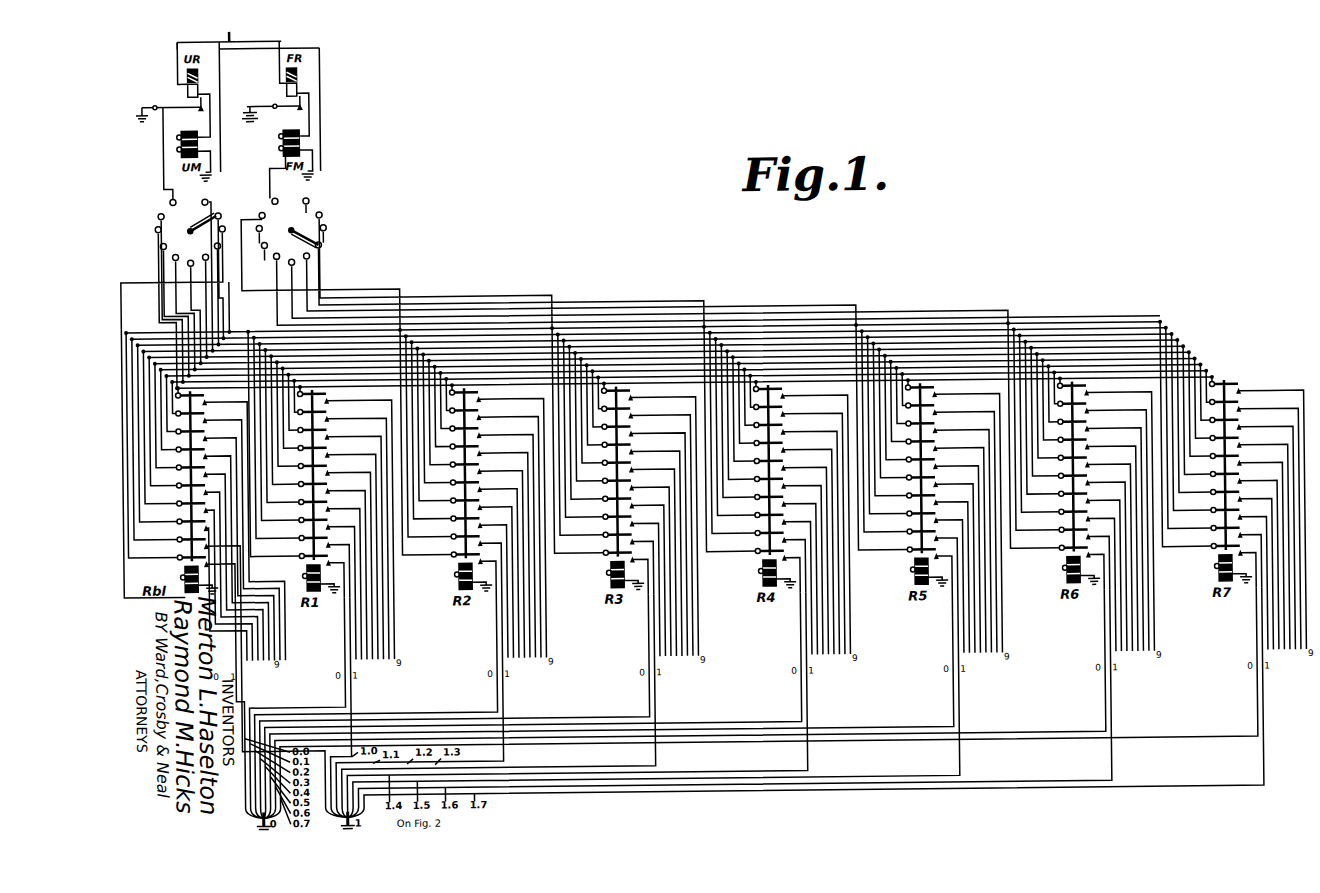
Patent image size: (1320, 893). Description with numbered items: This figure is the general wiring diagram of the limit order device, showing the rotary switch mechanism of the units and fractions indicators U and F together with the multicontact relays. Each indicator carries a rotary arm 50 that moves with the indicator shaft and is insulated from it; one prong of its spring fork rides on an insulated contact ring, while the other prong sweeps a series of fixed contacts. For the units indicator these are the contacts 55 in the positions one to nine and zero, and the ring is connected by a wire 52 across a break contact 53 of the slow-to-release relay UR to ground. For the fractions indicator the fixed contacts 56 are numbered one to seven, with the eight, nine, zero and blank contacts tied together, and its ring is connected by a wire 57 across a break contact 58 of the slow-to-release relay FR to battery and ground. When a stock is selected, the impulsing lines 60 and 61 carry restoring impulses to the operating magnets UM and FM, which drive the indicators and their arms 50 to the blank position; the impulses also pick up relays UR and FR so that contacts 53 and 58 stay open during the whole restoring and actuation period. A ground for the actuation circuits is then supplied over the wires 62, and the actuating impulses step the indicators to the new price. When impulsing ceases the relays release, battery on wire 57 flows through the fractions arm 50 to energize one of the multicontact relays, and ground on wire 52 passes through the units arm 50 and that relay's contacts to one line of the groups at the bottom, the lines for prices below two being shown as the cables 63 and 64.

The rotary arm 50 is at (239, 233).
The wire 52 is at (166, 160).
The break contact 53 is at (181, 107).
The contacts 55 is at (210, 204).
The contacts 56 is at (312, 204).
The wire 57 is at (284, 157).
The break contact 58 is at (290, 106).
The impulsing line 60 is at (206, 38).
The impulsing line 61 is at (286, 43).
The wires 62 is at (325, 100).
The cable 63 is at (248, 821).
The cable 64 is at (337, 821).